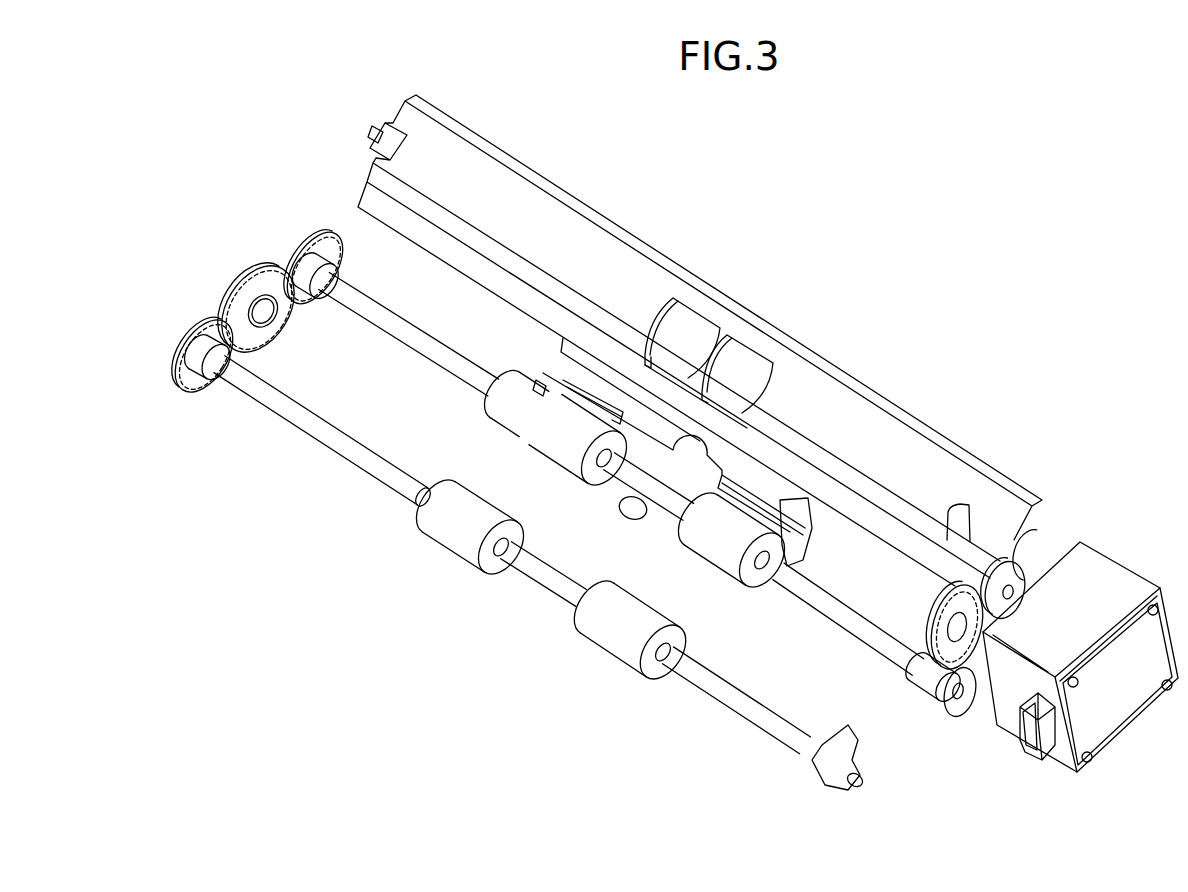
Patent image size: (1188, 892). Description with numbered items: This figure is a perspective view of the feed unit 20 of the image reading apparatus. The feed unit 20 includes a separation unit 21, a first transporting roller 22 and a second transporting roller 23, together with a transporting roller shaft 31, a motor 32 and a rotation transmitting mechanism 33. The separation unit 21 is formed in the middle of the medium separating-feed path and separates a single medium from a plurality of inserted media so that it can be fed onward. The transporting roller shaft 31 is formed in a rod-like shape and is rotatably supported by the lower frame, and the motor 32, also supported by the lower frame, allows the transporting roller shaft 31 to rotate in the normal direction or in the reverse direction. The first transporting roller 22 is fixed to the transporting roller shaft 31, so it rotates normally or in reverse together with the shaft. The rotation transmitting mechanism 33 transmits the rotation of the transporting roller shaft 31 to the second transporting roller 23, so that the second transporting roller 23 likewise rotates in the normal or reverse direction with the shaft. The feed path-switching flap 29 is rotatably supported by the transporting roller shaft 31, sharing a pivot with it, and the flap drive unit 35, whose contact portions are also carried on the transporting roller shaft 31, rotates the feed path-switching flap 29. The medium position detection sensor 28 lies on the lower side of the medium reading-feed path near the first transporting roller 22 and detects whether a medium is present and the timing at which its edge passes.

The feed unit 20 is at (828, 210).
The separation unit 21 is at (688, 327).
The first transporting roller 22 is at (555, 448).
The second transporting roller 23 is at (447, 540).
The medium position detection sensor 28 is at (632, 520).
The feed path-switching flap 29 is at (585, 365).
The transporting roller shaft 31 is at (837, 625).
The motor 32 is at (1105, 573).
The rotation transmitting mechanism 33 is at (296, 212).
The flap drive unit 35 is at (510, 373).